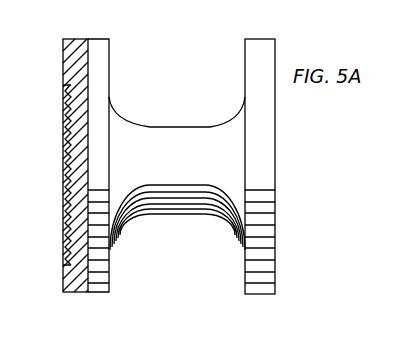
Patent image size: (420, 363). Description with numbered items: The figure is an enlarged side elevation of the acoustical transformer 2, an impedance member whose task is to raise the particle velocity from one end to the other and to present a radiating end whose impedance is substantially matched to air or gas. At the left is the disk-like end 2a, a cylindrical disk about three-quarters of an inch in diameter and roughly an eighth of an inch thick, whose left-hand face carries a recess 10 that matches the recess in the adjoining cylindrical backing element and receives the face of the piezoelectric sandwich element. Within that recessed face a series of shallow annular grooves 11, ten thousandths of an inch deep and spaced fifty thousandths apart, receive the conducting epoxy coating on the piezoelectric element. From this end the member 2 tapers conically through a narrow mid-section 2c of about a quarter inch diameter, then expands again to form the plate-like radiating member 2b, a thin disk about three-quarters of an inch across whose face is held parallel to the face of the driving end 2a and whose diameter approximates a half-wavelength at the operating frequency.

The recess 10 is at (63, 181).
The annular grooves 11 is at (63, 128).
The acoustical transformer 2 is at (204, 126).
The disk-like end 2a is at (100, 55).
The plate-like radiating member 2b is at (259, 49).
The bottom web 2c is at (147, 135).